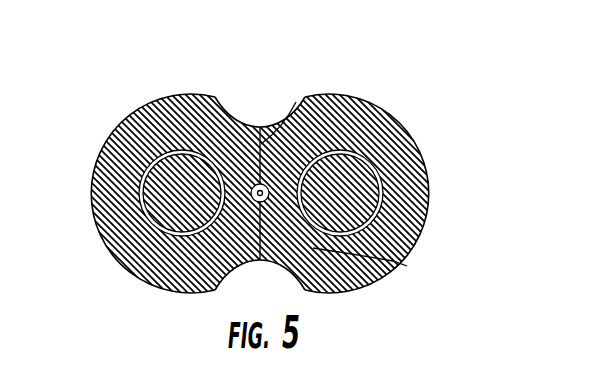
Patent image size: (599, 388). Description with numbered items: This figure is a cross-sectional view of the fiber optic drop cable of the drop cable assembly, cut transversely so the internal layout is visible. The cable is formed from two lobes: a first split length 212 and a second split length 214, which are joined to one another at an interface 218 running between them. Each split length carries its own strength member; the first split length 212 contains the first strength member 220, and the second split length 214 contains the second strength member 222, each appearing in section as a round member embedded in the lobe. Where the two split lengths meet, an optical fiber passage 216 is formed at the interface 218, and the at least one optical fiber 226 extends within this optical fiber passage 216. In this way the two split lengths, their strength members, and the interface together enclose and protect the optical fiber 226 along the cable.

The first split length 212 is at (385, 106).
The second split length 214 is at (160, 93).
The optical fiber passage 216 is at (407, 266).
The interface 218 is at (298, 102).
The first strength member 220 is at (372, 160).
The second strength member 222 is at (213, 262).
The optical fiber 226 is at (254, 200).